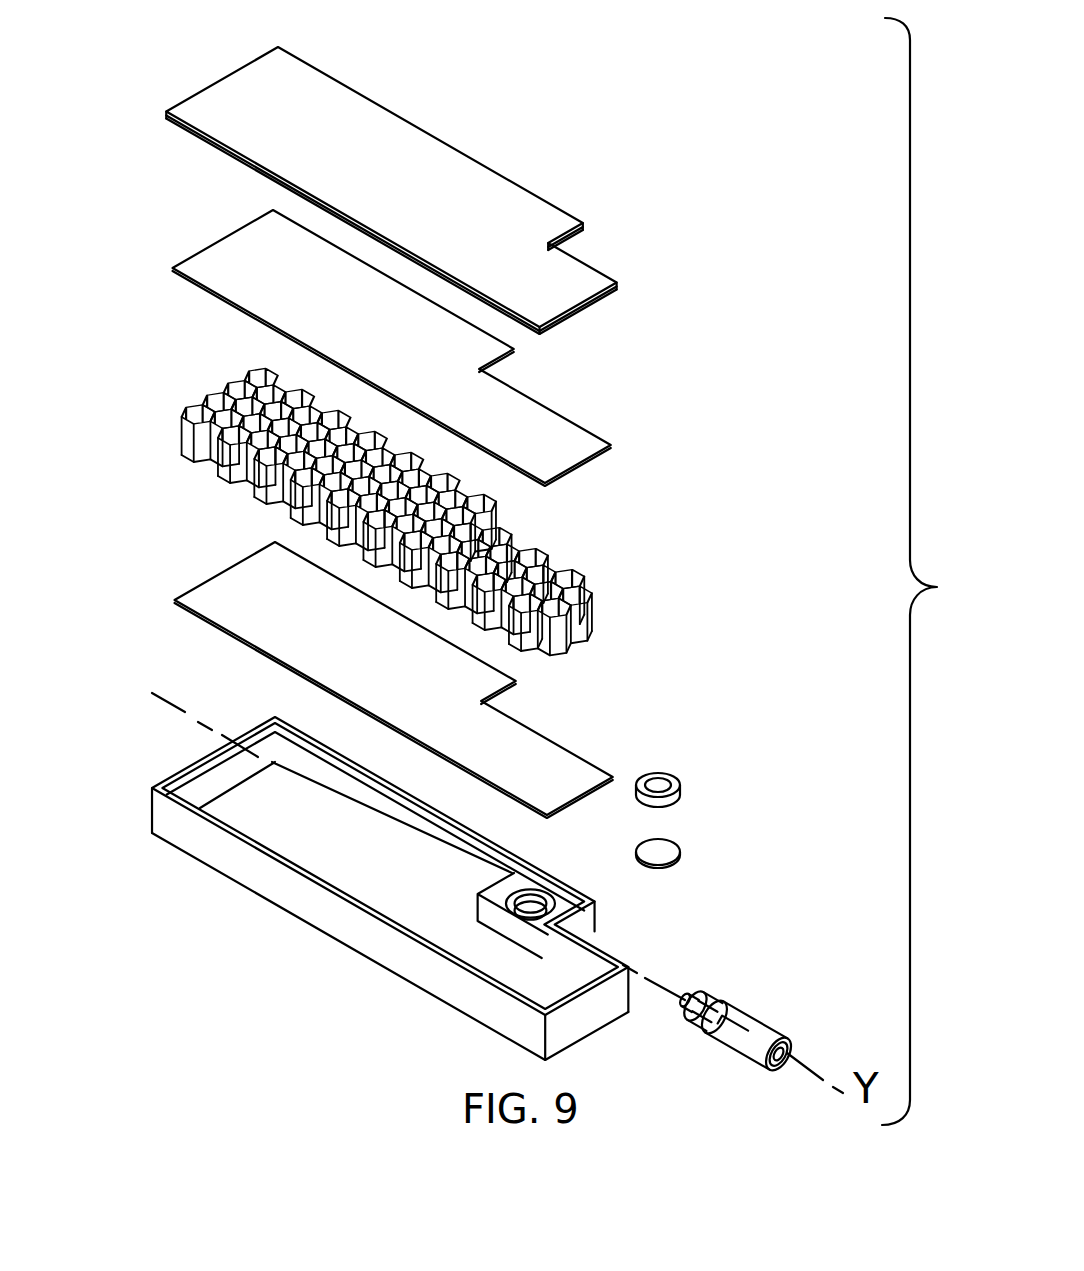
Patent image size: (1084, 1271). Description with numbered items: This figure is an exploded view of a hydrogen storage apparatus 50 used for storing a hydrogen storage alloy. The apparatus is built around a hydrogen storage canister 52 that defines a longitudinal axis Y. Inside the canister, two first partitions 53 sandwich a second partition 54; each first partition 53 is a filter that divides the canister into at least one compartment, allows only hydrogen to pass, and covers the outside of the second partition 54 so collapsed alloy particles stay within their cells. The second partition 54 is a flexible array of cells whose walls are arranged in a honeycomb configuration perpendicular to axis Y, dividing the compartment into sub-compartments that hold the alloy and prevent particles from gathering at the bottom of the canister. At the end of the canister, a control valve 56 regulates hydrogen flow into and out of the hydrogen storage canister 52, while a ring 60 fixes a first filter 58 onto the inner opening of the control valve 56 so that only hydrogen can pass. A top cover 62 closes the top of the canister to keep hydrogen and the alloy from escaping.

The hydrogen storage apparatus 50 is at (752, 138).
The hydrogen storage canister 52 is at (148, 820).
The first partition 53 is at (558, 420).
The second partition 54 is at (580, 583).
The control valve 56 is at (737, 990).
The first filter 58 is at (680, 848).
The ring 60 is at (658, 774).
The top cover 62 is at (507, 173).